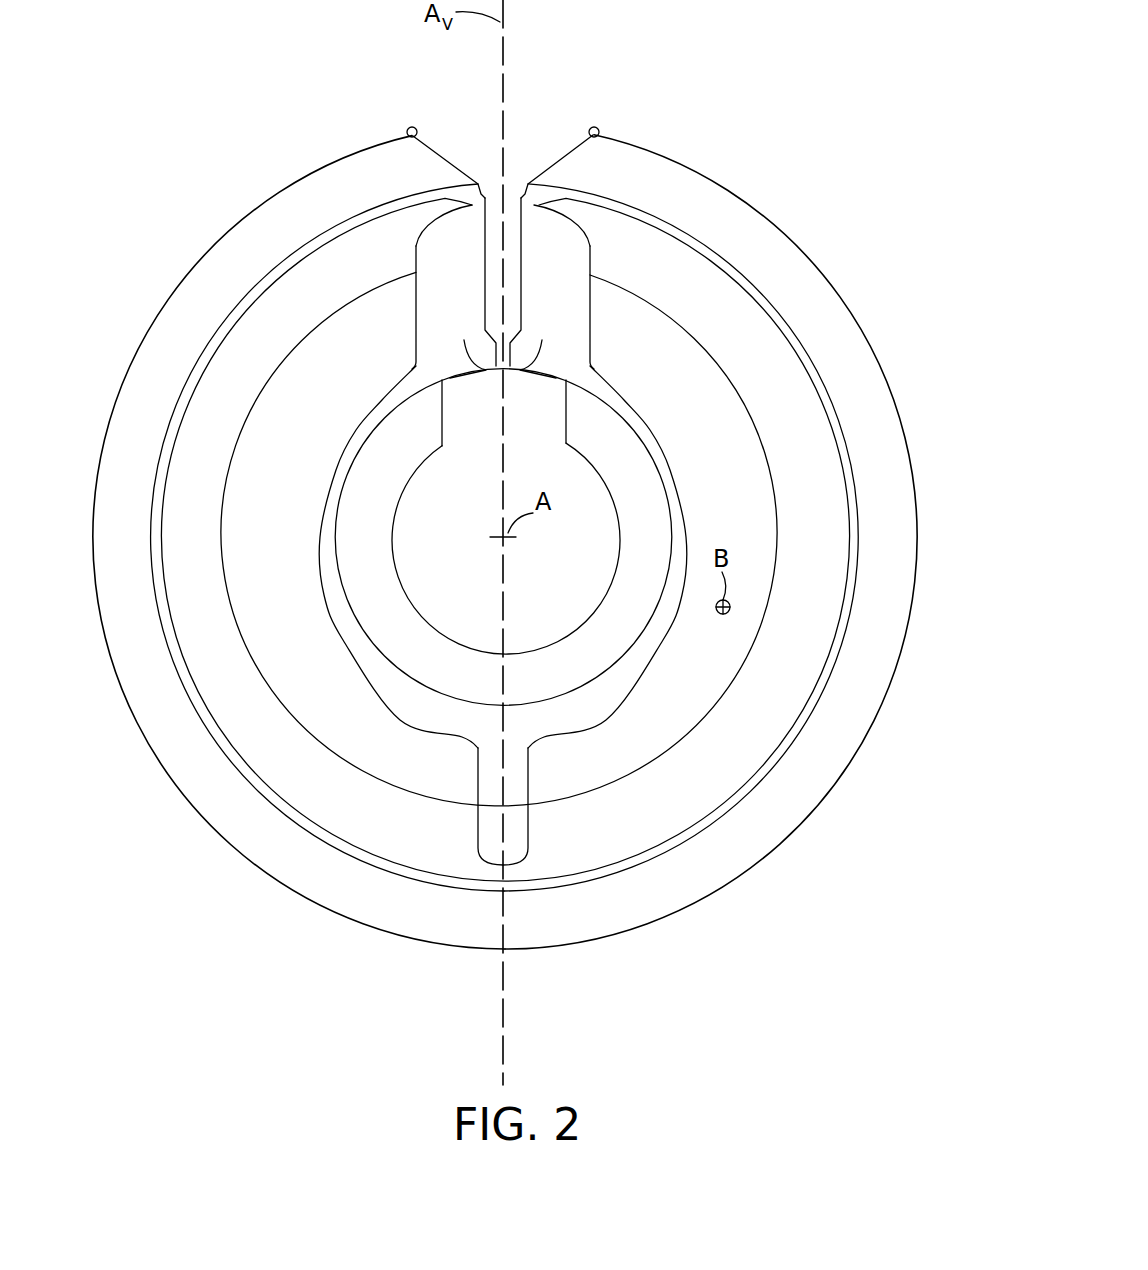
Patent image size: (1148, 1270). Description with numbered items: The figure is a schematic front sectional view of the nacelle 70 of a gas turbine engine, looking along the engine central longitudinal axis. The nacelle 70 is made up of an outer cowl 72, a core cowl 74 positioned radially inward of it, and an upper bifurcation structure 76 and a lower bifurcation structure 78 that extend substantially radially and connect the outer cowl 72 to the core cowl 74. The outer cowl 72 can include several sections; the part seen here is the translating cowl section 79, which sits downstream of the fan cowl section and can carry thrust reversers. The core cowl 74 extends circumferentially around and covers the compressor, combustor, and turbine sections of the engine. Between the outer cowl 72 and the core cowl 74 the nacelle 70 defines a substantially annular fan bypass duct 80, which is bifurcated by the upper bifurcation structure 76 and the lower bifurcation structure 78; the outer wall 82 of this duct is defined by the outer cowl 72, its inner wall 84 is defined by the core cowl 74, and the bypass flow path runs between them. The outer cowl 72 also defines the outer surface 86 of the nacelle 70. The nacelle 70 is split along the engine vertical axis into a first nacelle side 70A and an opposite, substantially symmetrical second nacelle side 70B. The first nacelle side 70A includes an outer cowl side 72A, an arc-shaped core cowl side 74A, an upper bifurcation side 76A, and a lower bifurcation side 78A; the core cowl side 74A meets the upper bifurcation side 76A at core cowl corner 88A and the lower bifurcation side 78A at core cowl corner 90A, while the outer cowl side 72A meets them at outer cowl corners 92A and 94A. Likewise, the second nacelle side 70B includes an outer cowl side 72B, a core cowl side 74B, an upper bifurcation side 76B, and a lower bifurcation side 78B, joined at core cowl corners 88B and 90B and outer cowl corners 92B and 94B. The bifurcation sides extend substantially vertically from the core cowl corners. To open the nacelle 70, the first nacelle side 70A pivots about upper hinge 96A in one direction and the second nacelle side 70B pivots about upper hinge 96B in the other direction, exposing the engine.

The nacelle 70 is at (168, 125).
The first nacelle side 70A is at (152, 318).
The second nacelle side 70B is at (815, 252).
The outer cowl 72 is at (333, 150).
The outer cowl side 72A is at (247, 210).
The outer cowl side 72B is at (688, 153).
The core cowl 74 is at (352, 414).
The core cowl side 74A is at (392, 515).
The core cowl side 74B is at (619, 532).
The upper bifurcation structure 76 is at (405, 320).
The upper bifurcation side 76A is at (463, 330).
The upper bifurcation side 76B is at (543, 330).
The lower bifurcation structure 78 is at (468, 777).
The lower bifurcation side 78A is at (489, 768).
The lower bifurcation side 78B is at (517, 784).
The translating cowl section 79 is at (220, 258).
The fan bypass duct 80 is at (258, 432).
The outer wall 82 is at (228, 602).
The inner wall 84 is at (318, 545).
The outer surface 86 is at (298, 886).
The core cowl corner 88A is at (414, 372).
The core cowl corner 88B is at (592, 372).
The core cowl corner 90A is at (398, 722).
The core cowl corner 90B is at (570, 735).
The outer cowl corner 92A is at (397, 240).
The outer cowl corner 92B is at (607, 240).
The outer cowl corner 94A is at (470, 850).
The outer cowl corner 94B is at (534, 850).
The upper hinge 96A is at (412, 127).
The upper hinge 96B is at (594, 127).